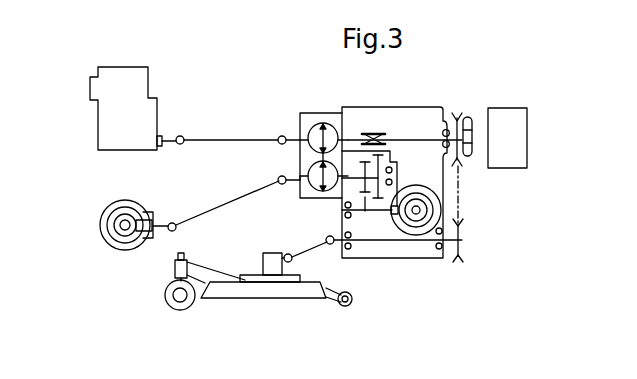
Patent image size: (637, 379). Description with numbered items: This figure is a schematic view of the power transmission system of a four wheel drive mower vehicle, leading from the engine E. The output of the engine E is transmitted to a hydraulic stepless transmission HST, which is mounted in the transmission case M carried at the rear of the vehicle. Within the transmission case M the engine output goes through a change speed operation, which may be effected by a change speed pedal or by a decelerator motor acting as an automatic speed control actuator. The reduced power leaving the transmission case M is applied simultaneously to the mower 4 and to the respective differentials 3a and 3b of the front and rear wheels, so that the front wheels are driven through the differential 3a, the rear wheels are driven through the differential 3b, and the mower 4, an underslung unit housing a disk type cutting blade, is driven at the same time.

The engine E is at (133, 68).
The hydraulic stepless transmission HST is at (300, 112).
The transmission case M is at (395, 258).
The differential of the front wheels 3a is at (127, 251).
The differential of the rear wheels 3b is at (420, 229).
The mower 4 is at (257, 304).